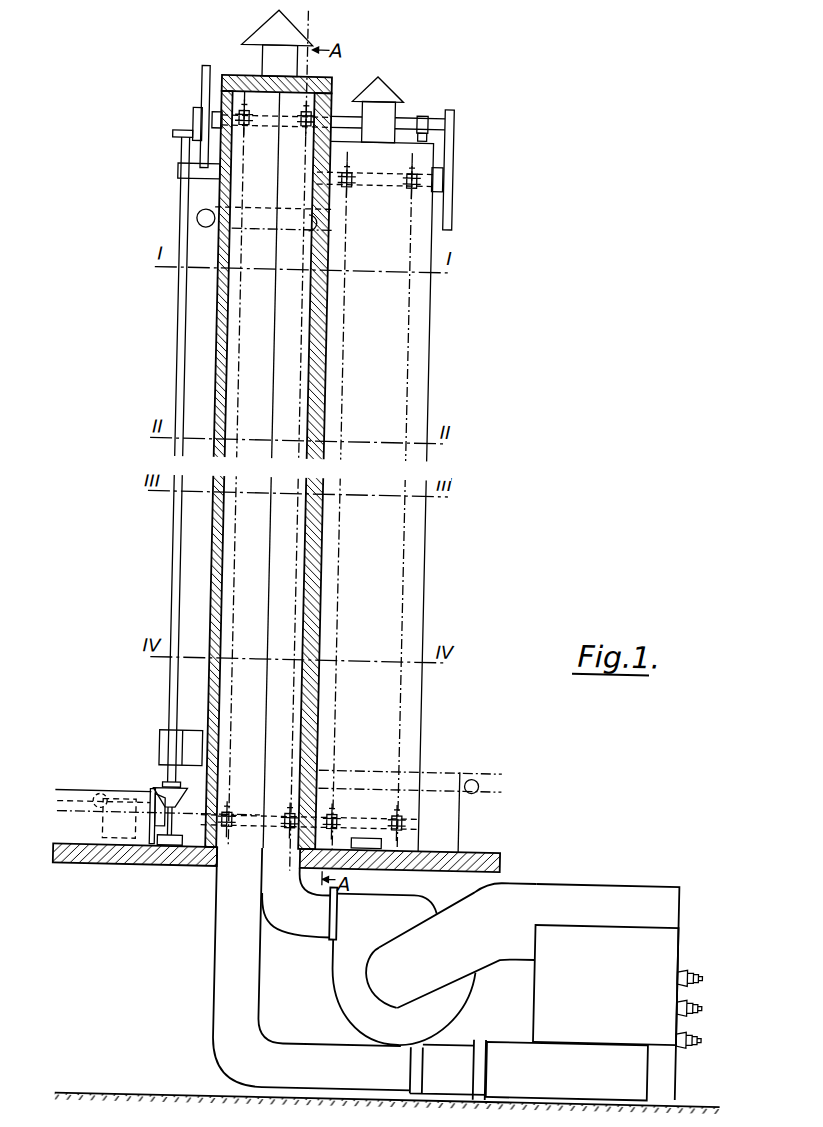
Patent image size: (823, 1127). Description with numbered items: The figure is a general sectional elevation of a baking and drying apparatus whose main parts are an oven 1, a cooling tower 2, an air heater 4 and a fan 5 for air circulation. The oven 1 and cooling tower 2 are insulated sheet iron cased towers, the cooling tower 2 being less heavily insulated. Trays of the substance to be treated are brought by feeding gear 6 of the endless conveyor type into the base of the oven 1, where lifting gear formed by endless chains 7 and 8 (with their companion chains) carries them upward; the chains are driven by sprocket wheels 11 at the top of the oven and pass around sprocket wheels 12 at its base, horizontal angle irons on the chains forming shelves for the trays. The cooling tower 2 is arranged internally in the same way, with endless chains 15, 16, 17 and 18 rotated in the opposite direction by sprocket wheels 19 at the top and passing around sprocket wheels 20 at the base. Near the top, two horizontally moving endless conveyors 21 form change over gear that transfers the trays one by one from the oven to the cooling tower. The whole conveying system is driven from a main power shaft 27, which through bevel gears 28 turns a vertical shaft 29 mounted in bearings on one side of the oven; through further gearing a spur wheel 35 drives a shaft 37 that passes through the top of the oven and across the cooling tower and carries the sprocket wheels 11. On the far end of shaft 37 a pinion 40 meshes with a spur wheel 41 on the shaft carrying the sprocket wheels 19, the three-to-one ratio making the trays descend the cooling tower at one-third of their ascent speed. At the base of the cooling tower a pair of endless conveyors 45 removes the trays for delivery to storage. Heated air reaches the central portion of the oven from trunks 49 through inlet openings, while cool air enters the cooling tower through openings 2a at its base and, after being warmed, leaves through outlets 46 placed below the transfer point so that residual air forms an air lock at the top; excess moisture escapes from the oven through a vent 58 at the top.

The oven 1 is at (227, 611).
The cooling tower 2 is at (427, 634).
The opening 2a is at (392, 848).
The air heater 4 is at (568, 988).
The fan 5 is at (365, 966).
The feeding gear 6 is at (146, 806).
The endless chain 7 is at (306, 374).
The endless chain 8 is at (240, 353).
The sprocket wheels 11 is at (320, 81).
The sprocket wheels 12 is at (245, 809).
The endless chain 15 is at (421, 567).
The endless chain 16 is at (353, 551).
The endless chain 17 is at (417, 597).
The endless chain 18 is at (352, 610).
The sprocket wheels 19 is at (349, 193).
The sprocket wheels 20 is at (356, 807).
The endless conveyors 21 is at (279, 228).
The main power shaft 27 is at (101, 812).
The bevel gears 28 is at (171, 795).
The vertical shaft 29 is at (188, 582).
The spur wheel 35 is at (202, 74).
The shaft 37 is at (406, 119).
The pinion 40 is at (455, 118).
The spur wheel 41 is at (447, 176).
The endless conveyors 45 is at (448, 768).
The outlets 46 is at (386, 112).
The trunks 49 is at (294, 698).
The vent 58 is at (283, 60).